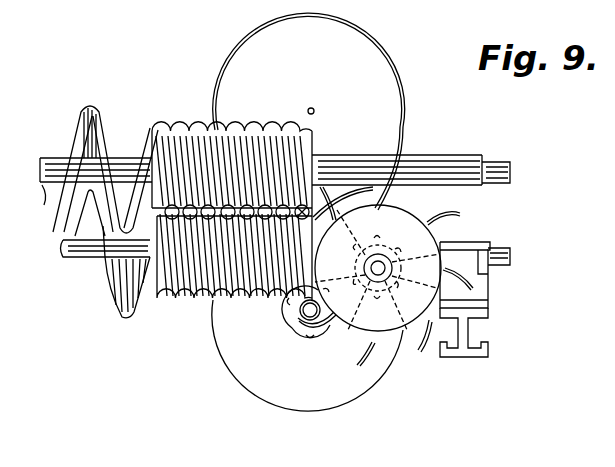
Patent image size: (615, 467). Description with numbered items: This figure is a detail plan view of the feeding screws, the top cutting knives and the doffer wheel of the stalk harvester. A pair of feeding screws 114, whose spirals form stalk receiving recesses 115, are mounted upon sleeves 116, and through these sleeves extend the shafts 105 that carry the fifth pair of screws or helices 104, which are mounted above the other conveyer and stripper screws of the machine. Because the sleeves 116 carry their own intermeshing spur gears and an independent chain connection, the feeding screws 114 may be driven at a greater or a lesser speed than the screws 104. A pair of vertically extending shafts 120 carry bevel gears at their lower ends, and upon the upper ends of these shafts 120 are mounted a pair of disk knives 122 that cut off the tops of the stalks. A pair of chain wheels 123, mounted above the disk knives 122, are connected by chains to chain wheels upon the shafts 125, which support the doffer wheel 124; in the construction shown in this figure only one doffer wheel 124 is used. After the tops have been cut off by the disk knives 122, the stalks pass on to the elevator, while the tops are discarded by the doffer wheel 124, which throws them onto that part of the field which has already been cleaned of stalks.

The screws or helices 104 is at (52, 192).
The shafts 105 is at (501, 167).
The feeding screws 114 is at (189, 133).
The stalk receiving recesses 115 is at (112, 270).
The sleeves 116 is at (446, 164).
The vertically extending shafts 120 is at (315, 112).
The disk knives 122 is at (382, 46).
The chain wheels 123 is at (290, 311).
The doffer wheel 124 is at (461, 216).
The shafts 125 is at (376, 274).